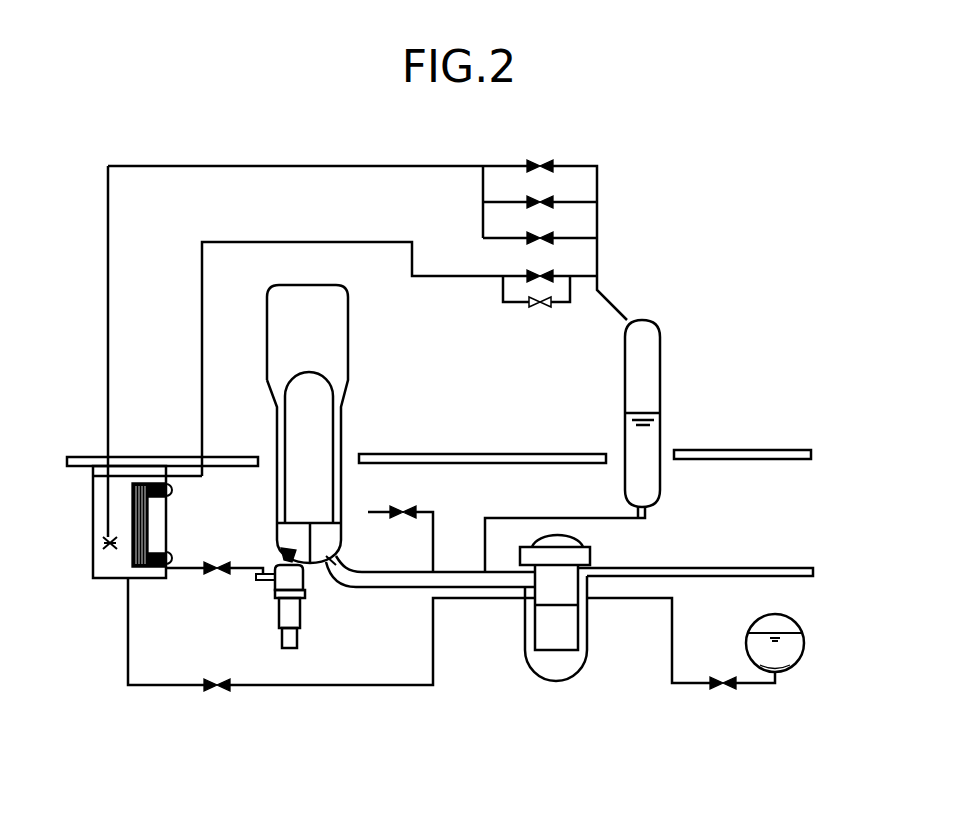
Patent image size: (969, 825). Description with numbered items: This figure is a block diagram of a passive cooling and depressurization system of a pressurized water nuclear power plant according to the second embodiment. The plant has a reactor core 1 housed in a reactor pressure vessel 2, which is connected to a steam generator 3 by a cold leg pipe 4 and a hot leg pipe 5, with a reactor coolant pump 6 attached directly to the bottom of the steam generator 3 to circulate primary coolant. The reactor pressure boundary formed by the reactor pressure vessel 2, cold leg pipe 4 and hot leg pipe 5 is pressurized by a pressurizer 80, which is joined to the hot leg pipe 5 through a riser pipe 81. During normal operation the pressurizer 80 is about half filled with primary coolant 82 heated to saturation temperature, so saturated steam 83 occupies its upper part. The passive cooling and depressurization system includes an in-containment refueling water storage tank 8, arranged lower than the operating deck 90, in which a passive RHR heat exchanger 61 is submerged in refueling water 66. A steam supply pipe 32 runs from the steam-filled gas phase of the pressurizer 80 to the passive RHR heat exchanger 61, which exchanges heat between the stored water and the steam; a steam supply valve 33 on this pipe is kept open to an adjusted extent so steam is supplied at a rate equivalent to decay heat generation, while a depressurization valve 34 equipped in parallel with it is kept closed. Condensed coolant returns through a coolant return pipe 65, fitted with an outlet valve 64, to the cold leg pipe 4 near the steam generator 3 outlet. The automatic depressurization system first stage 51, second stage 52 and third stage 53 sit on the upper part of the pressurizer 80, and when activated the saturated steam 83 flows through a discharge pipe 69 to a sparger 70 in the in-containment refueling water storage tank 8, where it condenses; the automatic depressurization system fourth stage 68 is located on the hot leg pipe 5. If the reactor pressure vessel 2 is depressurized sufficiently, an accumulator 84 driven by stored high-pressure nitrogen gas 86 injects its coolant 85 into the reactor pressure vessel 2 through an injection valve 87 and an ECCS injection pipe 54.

The reactor core 1 is at (553, 640).
The reactor pressure vessel 2 is at (532, 670).
The steam generator 3 is at (348, 350).
The cold leg pipe 4 is at (262, 582).
The hot leg pipe 5 is at (398, 588).
The reactor coolant pump 6 is at (310, 593).
The in-containment refueling water storage tank 8 is at (93, 493).
The steam supply pipe 32 is at (305, 242).
The steam supply valve 33 is at (545, 310).
The depressurization valve 34 is at (560, 276).
The automatic depressurization system first stage 51 is at (557, 162).
The automatic depressurization system second stage 52 is at (558, 200).
The automatic depressurization system third stage 53 is at (558, 238).
The ECCS injection pipe 54 is at (672, 647).
The passive RHR heat exchanger 61 is at (150, 513).
The outlet valve 64 is at (217, 578).
The coolant return pipe 65 is at (214, 577).
The refueling water 66 is at (110, 567).
The automatic depressurization system fourth stage 68 is at (403, 508).
The discharge pipe 69 is at (243, 166).
The sparger 70 is at (100, 545).
The pressurizer 80 is at (683, 413).
The riser pipe 81 is at (520, 518).
The primary coolant 82 is at (645, 436).
The saturated steam 83 is at (643, 366).
The accumulator 84 is at (809, 641).
The coolant 85 is at (782, 665).
The nitrogen gas 86 is at (778, 620).
The injection valve 87 is at (725, 692).
The operating deck 90 is at (745, 450).